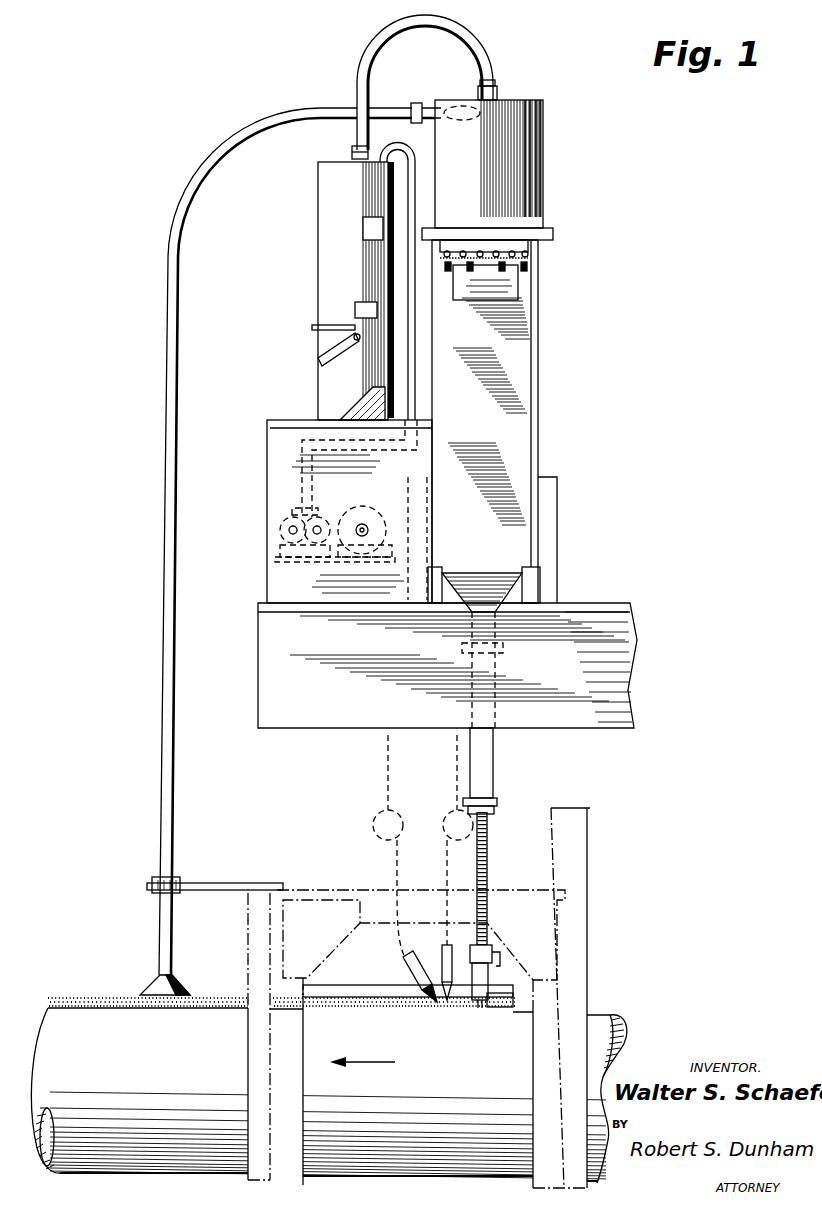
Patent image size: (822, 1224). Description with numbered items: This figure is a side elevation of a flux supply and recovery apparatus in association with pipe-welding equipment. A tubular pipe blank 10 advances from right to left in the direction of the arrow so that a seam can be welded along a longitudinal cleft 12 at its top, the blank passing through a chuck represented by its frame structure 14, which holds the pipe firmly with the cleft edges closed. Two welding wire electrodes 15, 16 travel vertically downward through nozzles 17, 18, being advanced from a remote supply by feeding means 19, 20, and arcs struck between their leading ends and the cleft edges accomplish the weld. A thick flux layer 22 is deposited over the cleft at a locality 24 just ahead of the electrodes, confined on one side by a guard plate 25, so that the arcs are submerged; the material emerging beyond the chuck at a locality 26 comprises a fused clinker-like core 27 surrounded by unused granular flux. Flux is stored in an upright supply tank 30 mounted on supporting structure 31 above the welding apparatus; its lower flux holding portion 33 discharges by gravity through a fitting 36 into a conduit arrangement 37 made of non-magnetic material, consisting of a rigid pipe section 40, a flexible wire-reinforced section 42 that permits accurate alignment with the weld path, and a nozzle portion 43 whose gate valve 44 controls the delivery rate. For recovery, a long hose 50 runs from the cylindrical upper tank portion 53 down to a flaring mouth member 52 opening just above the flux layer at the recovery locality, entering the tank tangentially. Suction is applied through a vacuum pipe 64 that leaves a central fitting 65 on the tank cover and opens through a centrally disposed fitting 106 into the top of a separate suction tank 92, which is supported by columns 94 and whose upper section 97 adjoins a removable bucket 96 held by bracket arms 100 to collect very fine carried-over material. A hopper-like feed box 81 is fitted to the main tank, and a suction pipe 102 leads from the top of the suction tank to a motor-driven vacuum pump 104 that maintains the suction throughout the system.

The tubular pipe blank 10 is at (348, 1074).
The longitudinal cleft 12 is at (528, 1010).
The frame structure of chuck device 14 is at (305, 907).
The welding wire electrode 15 is at (388, 760).
The welding wire electrode 16 is at (457, 765).
The nozzle 17 is at (405, 964).
The nozzle 18 is at (444, 960).
The wire feeding means 19 is at (373, 823).
The wire feeding means 20 is at (444, 821).
The flux layer 22 is at (347, 1000).
The flux deposit locality 24 is at (482, 1002).
The guard plate 25 is at (521, 1008).
The flux recovery locality 26 is at (160, 1004).
The fused flux core 27 is at (88, 978).
The supply tank 30 is at (519, 421).
The supporting structure 31 is at (600, 612).
The lower flux holding portion 33 is at (530, 386).
The discharge fitting 36 is at (500, 637).
The conduit arrangement 37 is at (502, 700).
The pipe section 40 is at (493, 760).
The flexible conduit section 42 is at (487, 870).
The nozzle portion 43 is at (476, 1008).
The gate valve 44 is at (492, 962).
The recovery conduit 50 is at (165, 522).
The flaring mouth member 52 is at (150, 982).
The upper tank portion 53 is at (543, 176).
The vacuum pipe 64 is at (357, 62).
The central fitting 65 is at (497, 95).
The feed box 81 is at (518, 287).
The suction tank 92 is at (319, 291).
The supporting columns 94 is at (385, 250).
The removable bucket 96 is at (320, 385).
The upper section of suction tank 97 is at (318, 214).
The bracket arms 100 is at (336, 350).
The suction pipe 102 is at (410, 186).
The vacuum pump 104 is at (293, 524).
The central fitting 106 is at (352, 152).